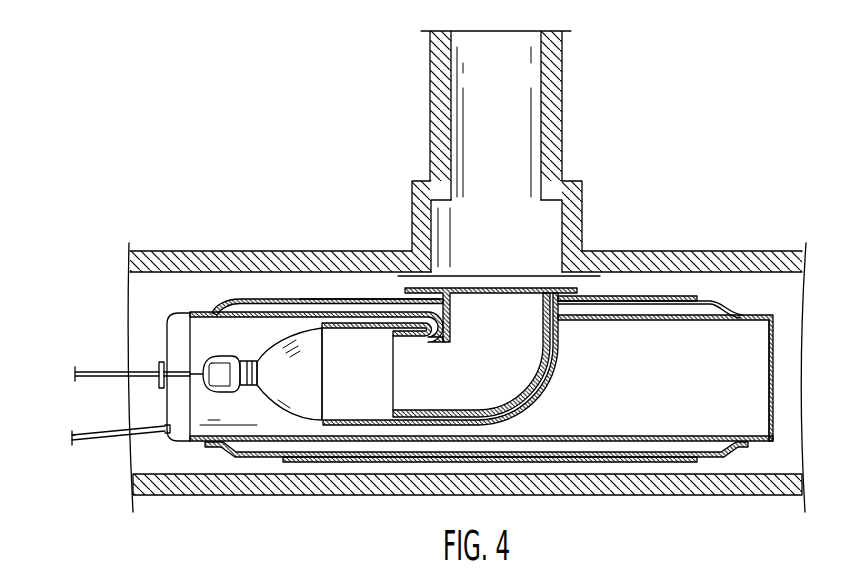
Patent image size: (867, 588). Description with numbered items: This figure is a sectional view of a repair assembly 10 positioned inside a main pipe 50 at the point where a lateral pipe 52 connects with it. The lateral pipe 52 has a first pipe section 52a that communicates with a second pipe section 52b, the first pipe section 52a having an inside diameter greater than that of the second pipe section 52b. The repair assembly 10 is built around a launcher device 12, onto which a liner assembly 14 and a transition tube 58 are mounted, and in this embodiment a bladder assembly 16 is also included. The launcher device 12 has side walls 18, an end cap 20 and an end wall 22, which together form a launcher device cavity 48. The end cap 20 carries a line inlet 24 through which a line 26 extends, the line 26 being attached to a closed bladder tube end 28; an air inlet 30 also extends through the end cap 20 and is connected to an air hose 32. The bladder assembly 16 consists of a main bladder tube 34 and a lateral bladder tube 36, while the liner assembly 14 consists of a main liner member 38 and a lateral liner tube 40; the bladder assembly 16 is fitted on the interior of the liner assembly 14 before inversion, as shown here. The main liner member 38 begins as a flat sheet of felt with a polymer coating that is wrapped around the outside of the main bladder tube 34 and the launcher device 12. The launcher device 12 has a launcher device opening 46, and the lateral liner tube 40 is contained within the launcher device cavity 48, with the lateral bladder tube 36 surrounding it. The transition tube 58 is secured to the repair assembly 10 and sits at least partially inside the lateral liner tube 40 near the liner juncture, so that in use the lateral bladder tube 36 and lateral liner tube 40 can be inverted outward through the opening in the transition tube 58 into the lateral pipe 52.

The repair assembly 10 is at (124, 310).
The launcher device 12 is at (393, 373).
The liner assembly 14 is at (604, 290).
The bladder assembly 16 is at (548, 390).
The side walls 18 is at (258, 313).
The end cap 20 is at (178, 400).
The end wall 22 is at (517, 388).
The line inlet 24 is at (160, 364).
The line 26 is at (105, 379).
The closed bladder tube end 28 is at (242, 360).
The air inlet 30 is at (168, 432).
The air hose 32 is at (86, 442).
The main bladder tube 34 is at (232, 303).
The lateral bladder tube 36 is at (287, 345).
The main liner member 38 is at (362, 300).
The lateral liner tube 40 is at (377, 334).
The launcher device opening 46 is at (560, 323).
The launcher device cavity 48 is at (757, 411).
The main pipe 50 is at (690, 251).
The lateral pipe 52 is at (501, 151).
The first pipe section 52a is at (412, 193).
The second pipe section 52b is at (430, 137).
The transition tube 58 is at (547, 288).